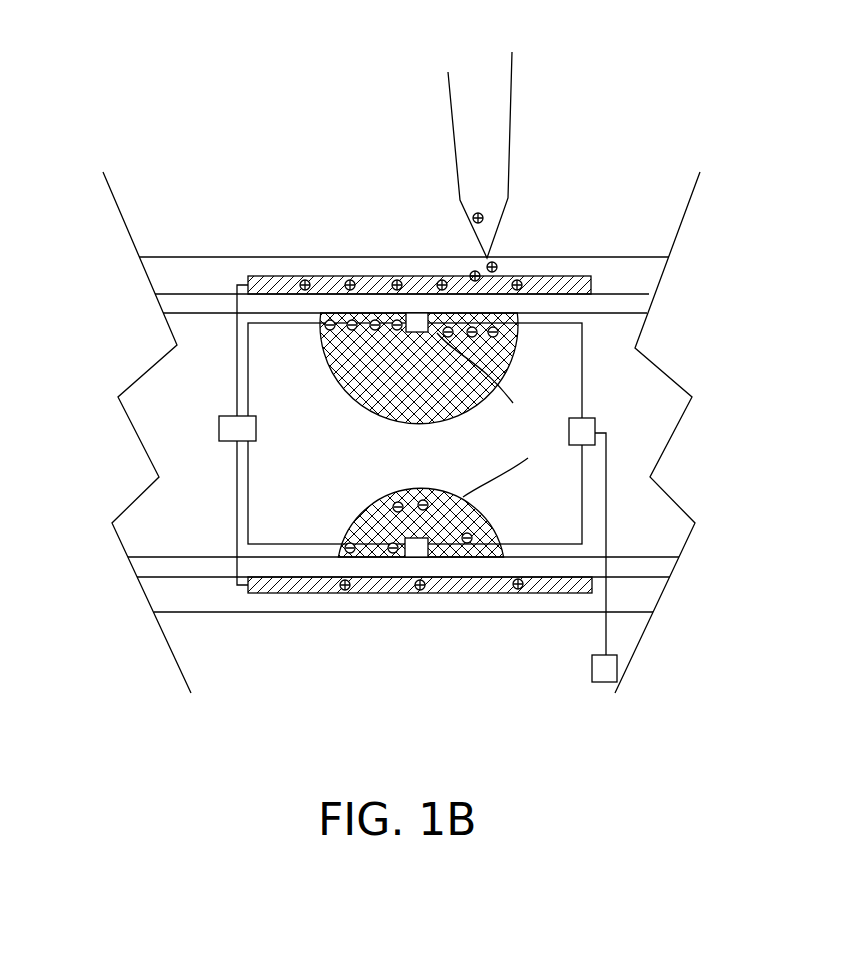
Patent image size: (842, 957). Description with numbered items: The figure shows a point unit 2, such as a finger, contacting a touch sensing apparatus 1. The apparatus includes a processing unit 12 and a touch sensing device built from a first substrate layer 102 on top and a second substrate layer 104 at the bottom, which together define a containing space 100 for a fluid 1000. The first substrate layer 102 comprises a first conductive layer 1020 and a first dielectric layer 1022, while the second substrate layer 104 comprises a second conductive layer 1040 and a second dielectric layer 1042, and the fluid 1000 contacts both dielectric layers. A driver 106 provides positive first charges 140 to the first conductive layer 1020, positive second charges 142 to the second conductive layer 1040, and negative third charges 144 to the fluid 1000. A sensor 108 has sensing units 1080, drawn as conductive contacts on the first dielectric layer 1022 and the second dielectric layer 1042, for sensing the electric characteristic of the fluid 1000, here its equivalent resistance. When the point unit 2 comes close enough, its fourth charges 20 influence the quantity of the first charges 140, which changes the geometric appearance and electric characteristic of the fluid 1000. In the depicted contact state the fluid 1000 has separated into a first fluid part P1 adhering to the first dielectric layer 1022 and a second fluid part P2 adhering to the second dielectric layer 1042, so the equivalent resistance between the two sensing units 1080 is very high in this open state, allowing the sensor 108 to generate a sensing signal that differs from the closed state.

The touch sensing apparatus 1 is at (206, 104).
The point unit 2 is at (510, 110).
The fourth charges 20 is at (473, 219).
The containing space 100 is at (196, 332).
The first substrate layer 102 is at (409, 241).
The first conductive layer 1020 is at (556, 285).
The first dielectric layer 1022 is at (633, 303).
The second substrate layer 104 is at (403, 633).
The second conductive layer 1040 is at (300, 585).
The second dielectric layer 1042 is at (215, 568).
The driver 106 is at (219, 428).
The sensor 108 is at (598, 424).
The processing unit 12 is at (601, 683).
The first charge 140 is at (307, 277).
The second charge 142 is at (518, 589).
The third charge 144 is at (343, 333).
The fluid 1000 is at (414, 435).
The first fluid part P1 is at (397, 378).
The second fluid part P2 is at (393, 489).
The sensing units 1080 is at (498, 415).